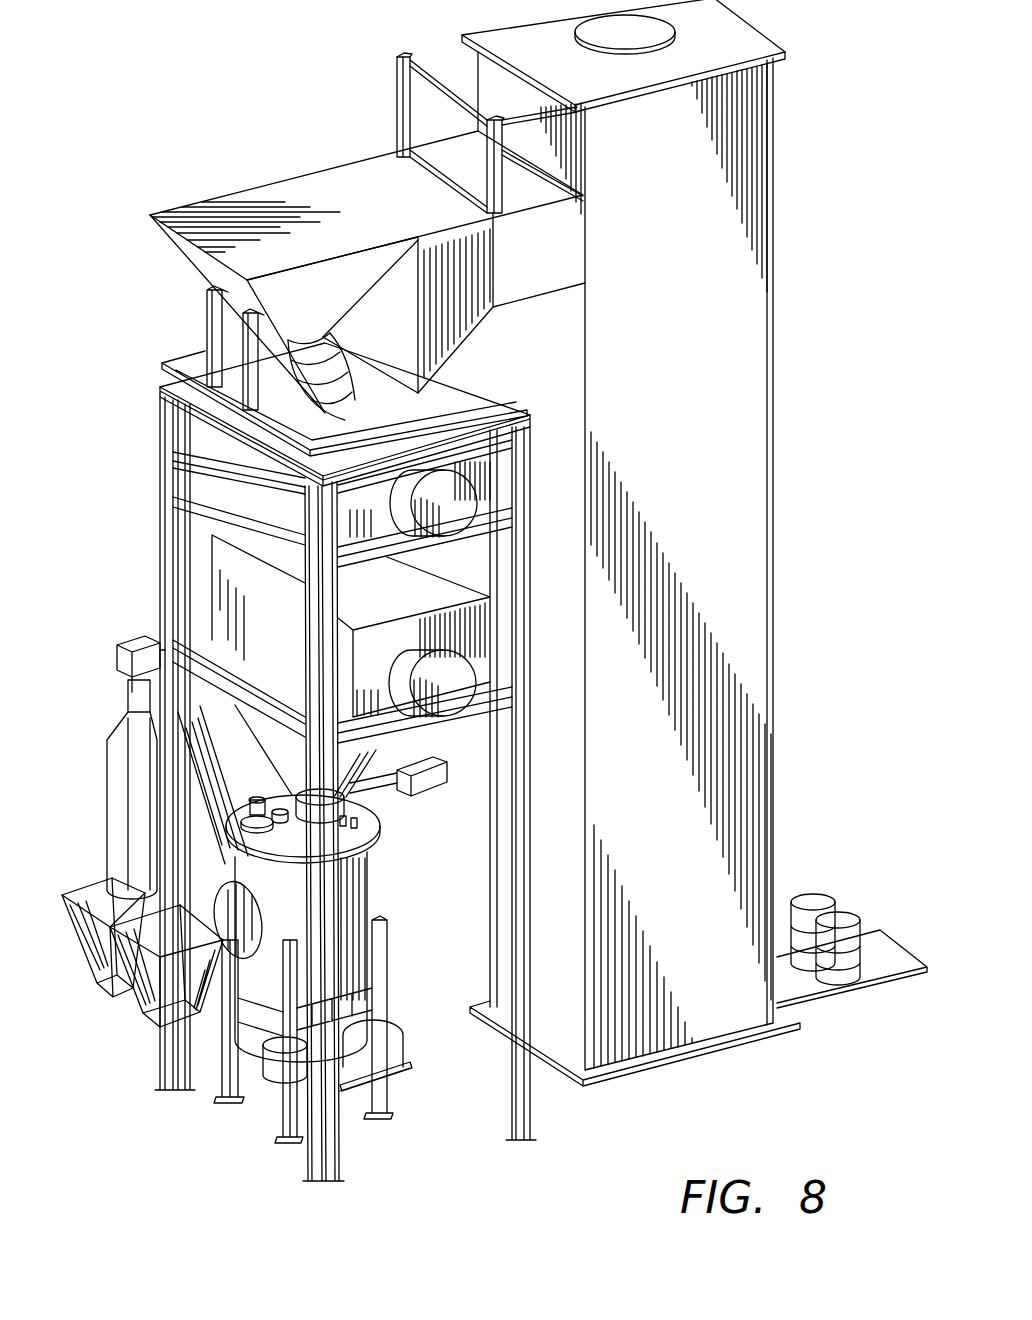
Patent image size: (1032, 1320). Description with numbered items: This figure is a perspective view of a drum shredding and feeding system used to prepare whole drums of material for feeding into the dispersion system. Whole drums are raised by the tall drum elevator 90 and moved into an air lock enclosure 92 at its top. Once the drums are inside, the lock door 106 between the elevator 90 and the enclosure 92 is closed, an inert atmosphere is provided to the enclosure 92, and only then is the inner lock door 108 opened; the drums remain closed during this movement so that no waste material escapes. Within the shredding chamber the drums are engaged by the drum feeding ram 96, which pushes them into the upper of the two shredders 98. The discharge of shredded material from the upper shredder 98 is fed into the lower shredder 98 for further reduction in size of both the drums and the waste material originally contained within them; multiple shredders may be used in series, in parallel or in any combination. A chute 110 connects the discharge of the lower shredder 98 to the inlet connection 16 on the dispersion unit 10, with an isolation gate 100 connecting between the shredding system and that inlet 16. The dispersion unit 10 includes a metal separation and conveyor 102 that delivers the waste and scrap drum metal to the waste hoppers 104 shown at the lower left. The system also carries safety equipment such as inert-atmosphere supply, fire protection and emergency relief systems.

The dispersion unit 10 is at (378, 893).
The inlet connection 16 is at (274, 827).
The drum elevator 90 is at (775, 430).
The air lock enclosure 92 is at (562, 250).
The drum feeding ram 96 is at (333, 188).
The shredders 98 is at (462, 497).
The isolation gate 100 is at (440, 786).
The metal separation and conveyor 102 is at (212, 800).
The waste hoppers 104 is at (143, 1003).
The lock door 106 is at (521, 97).
The inner lock door 108 is at (397, 57).
The chute 110 is at (300, 777).